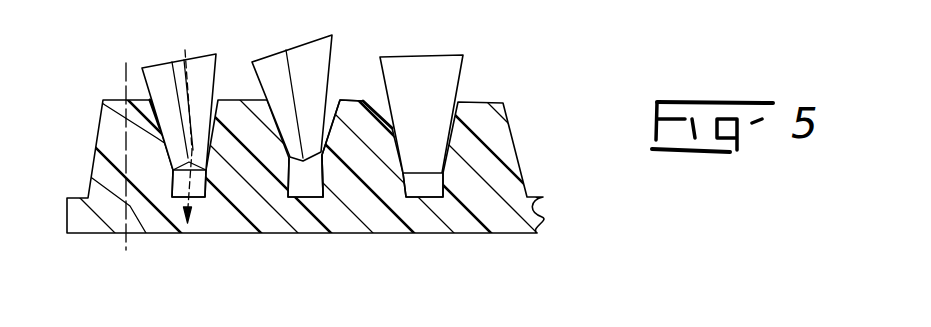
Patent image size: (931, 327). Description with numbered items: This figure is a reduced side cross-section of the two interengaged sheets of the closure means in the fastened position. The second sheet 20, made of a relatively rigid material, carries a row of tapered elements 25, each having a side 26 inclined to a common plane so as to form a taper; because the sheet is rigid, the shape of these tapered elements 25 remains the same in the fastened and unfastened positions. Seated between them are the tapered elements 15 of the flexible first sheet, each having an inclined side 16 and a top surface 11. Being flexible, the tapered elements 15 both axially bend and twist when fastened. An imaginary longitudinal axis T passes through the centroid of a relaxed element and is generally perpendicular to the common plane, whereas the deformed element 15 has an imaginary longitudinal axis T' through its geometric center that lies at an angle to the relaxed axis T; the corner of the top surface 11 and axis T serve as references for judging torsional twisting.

The top surface 11 is at (184, 172).
The tapered elements 15 is at (334, 54).
The side 16 is at (156, 84).
The second sheet 20 is at (548, 229).
The tapered elements 25 is at (364, 200).
The side 26 is at (406, 188).
The imaginary longitudinal axis T is at (102, 142).
The imaginary longitudinal axis T' is at (190, 172).